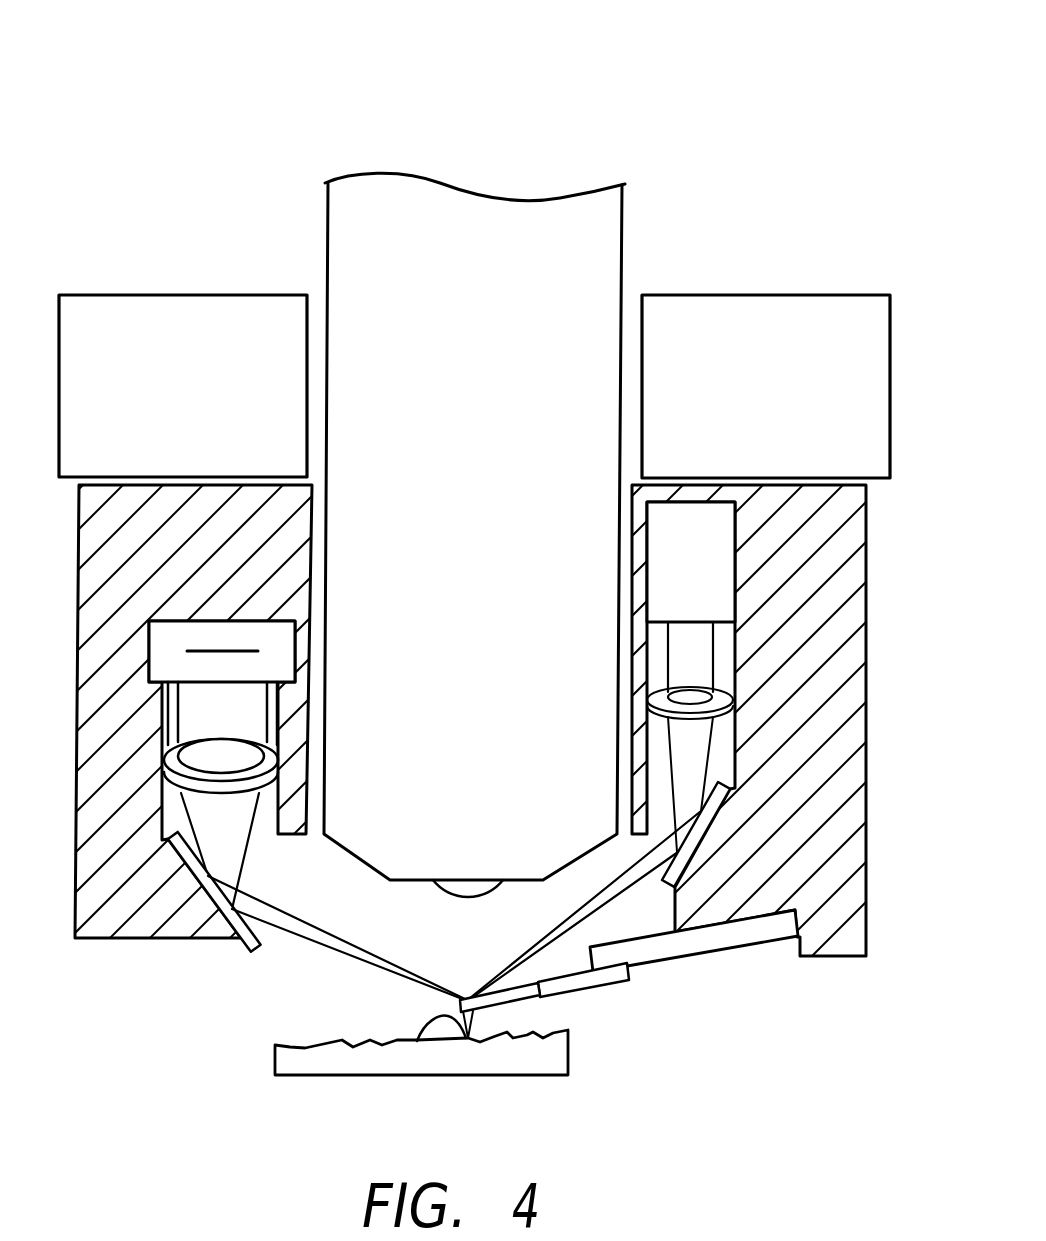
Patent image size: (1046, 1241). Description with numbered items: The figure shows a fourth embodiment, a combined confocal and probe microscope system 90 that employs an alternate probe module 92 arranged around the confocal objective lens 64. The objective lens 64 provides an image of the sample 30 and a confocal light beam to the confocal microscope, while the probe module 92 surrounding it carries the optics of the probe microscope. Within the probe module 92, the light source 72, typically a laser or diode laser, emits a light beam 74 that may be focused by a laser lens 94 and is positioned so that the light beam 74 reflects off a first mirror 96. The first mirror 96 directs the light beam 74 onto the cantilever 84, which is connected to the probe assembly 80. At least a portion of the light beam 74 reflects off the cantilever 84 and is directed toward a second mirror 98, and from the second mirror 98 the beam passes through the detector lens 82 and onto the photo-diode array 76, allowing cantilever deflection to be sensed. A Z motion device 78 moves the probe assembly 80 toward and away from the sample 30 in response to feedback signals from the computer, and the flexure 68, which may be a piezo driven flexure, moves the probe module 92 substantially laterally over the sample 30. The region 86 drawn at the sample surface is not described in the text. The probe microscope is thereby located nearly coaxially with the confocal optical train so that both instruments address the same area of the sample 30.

The sample 30 is at (278, 1060).
The objective lens 64 is at (594, 228).
The X, Y scanning translator 68 is at (842, 325).
The light source 72 is at (674, 550).
The light beam 74 is at (370, 958).
The photo-diode array 76 is at (283, 655).
The Z motion device 78 is at (740, 935).
The probe assembly 80 is at (612, 984).
The detector lens 82 is at (272, 748).
The cantilever 84 is at (517, 998).
The weld pool 86 is at (432, 1022).
The combined confocal and probe microscope system 90 is at (765, 178).
The probe module 92 is at (855, 574).
The laser lens 94 is at (664, 688).
The first mirror 96 is at (710, 812).
The second mirror 98 is at (258, 950).